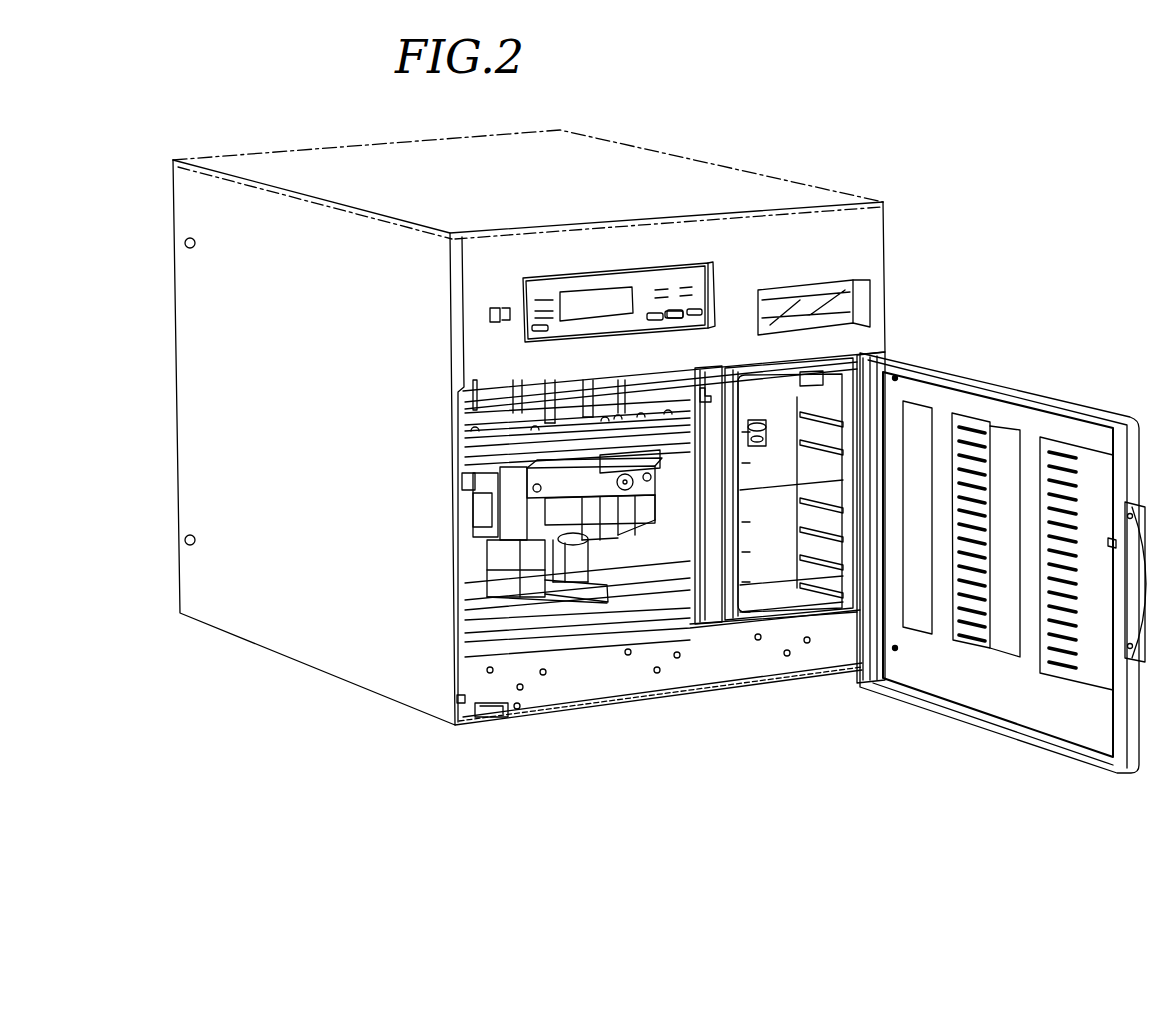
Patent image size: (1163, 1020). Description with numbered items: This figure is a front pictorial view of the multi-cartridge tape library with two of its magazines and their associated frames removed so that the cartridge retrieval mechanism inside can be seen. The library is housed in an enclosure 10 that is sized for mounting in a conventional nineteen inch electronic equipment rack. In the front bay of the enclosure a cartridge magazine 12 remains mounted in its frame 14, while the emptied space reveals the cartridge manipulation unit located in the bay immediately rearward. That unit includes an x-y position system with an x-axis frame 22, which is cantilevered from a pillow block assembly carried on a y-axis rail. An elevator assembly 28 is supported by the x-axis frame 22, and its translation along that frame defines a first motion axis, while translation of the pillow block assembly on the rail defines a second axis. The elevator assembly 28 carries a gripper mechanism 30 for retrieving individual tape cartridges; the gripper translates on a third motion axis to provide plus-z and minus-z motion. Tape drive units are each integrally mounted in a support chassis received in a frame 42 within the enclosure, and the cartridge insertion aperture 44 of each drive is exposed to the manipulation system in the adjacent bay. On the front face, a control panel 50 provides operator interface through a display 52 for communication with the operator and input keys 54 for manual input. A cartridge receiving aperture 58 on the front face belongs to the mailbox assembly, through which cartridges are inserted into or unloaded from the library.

The enclosure 10 is at (813, 188).
The cartridge magazine 12 is at (817, 522).
The frame 14 is at (720, 470).
The x-axis frame 22 is at (662, 440).
The elevator assembly 28 is at (612, 487).
The gripper mechanism 30 is at (535, 527).
The frame 42 is at (557, 408).
The cartridge insertion aperture 44 is at (480, 405).
The control panel 50 is at (680, 273).
The display 52 is at (595, 300).
The input keys 54 is at (677, 312).
The cartridge receiving aperture 58 is at (862, 305).